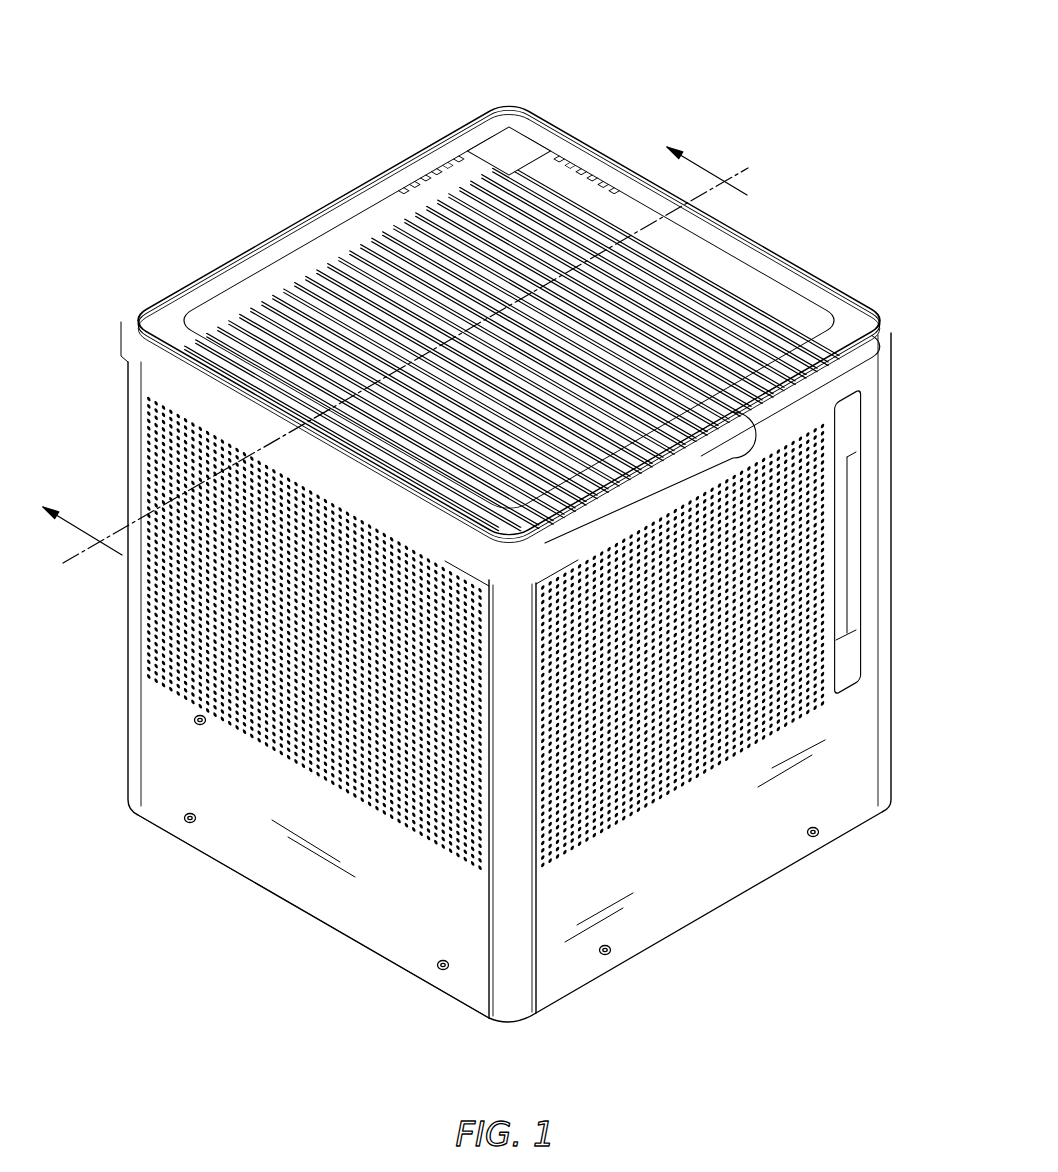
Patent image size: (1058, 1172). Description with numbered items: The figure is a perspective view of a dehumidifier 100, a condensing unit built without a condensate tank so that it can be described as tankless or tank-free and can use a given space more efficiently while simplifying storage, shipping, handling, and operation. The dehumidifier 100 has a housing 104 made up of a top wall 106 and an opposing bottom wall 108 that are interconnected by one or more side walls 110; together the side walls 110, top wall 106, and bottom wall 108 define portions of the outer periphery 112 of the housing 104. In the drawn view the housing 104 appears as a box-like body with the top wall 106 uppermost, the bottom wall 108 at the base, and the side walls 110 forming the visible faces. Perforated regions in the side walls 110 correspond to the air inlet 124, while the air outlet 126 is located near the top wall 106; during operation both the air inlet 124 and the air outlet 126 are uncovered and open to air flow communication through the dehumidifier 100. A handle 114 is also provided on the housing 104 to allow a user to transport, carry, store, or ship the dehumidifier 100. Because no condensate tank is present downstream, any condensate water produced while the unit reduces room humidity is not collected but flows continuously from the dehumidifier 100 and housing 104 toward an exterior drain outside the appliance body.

The dehumidifier 100 is at (501, 533).
The housing 104 is at (160, 736).
The top wall 106 is at (516, 329).
The bottom wall 108 is at (385, 957).
The side walls 110 is at (845, 368).
The outer periphery 112 is at (832, 547).
The handle 114 is at (205, 403).
The air inlet 124 is at (800, 478).
The air outlet 126 is at (346, 188).